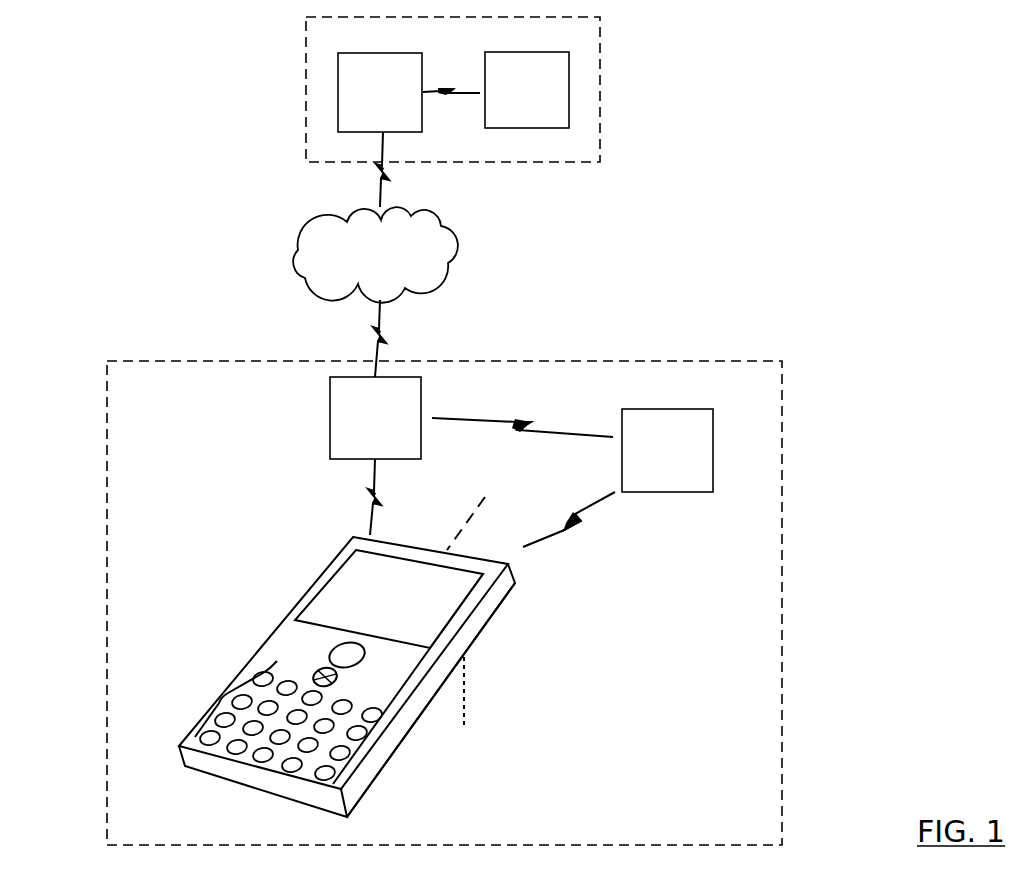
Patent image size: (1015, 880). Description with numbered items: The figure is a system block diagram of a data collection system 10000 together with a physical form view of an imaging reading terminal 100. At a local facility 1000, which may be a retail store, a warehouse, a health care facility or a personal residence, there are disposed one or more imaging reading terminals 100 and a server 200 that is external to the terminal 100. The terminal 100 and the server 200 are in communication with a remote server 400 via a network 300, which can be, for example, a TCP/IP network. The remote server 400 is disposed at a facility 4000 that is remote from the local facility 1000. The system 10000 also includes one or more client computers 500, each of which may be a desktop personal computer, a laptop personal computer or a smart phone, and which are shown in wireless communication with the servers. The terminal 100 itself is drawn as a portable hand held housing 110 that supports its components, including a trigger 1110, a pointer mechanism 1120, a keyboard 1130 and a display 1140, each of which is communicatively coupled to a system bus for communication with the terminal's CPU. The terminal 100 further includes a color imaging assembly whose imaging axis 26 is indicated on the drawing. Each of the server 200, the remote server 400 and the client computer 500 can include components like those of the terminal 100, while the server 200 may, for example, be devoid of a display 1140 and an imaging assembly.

The data collection system 10000 is at (697, 58).
The facility 4000 is at (593, 157).
The remote server 400 is at (380, 92).
The client computer 500 is at (599, 272).
The network 300 is at (375, 255).
The local facility 1000 is at (762, 830).
The server 200 is at (375, 418).
The imaging reading terminal 100 is at (522, 571).
The portable hand held housing 110 is at (413, 703).
The display 1140 is at (337, 595).
The trigger 1110 is at (338, 645).
The pointer mechanism 1120 is at (318, 670).
The keyboard 1130 is at (225, 695).
The imaging axis 26 is at (470, 522).